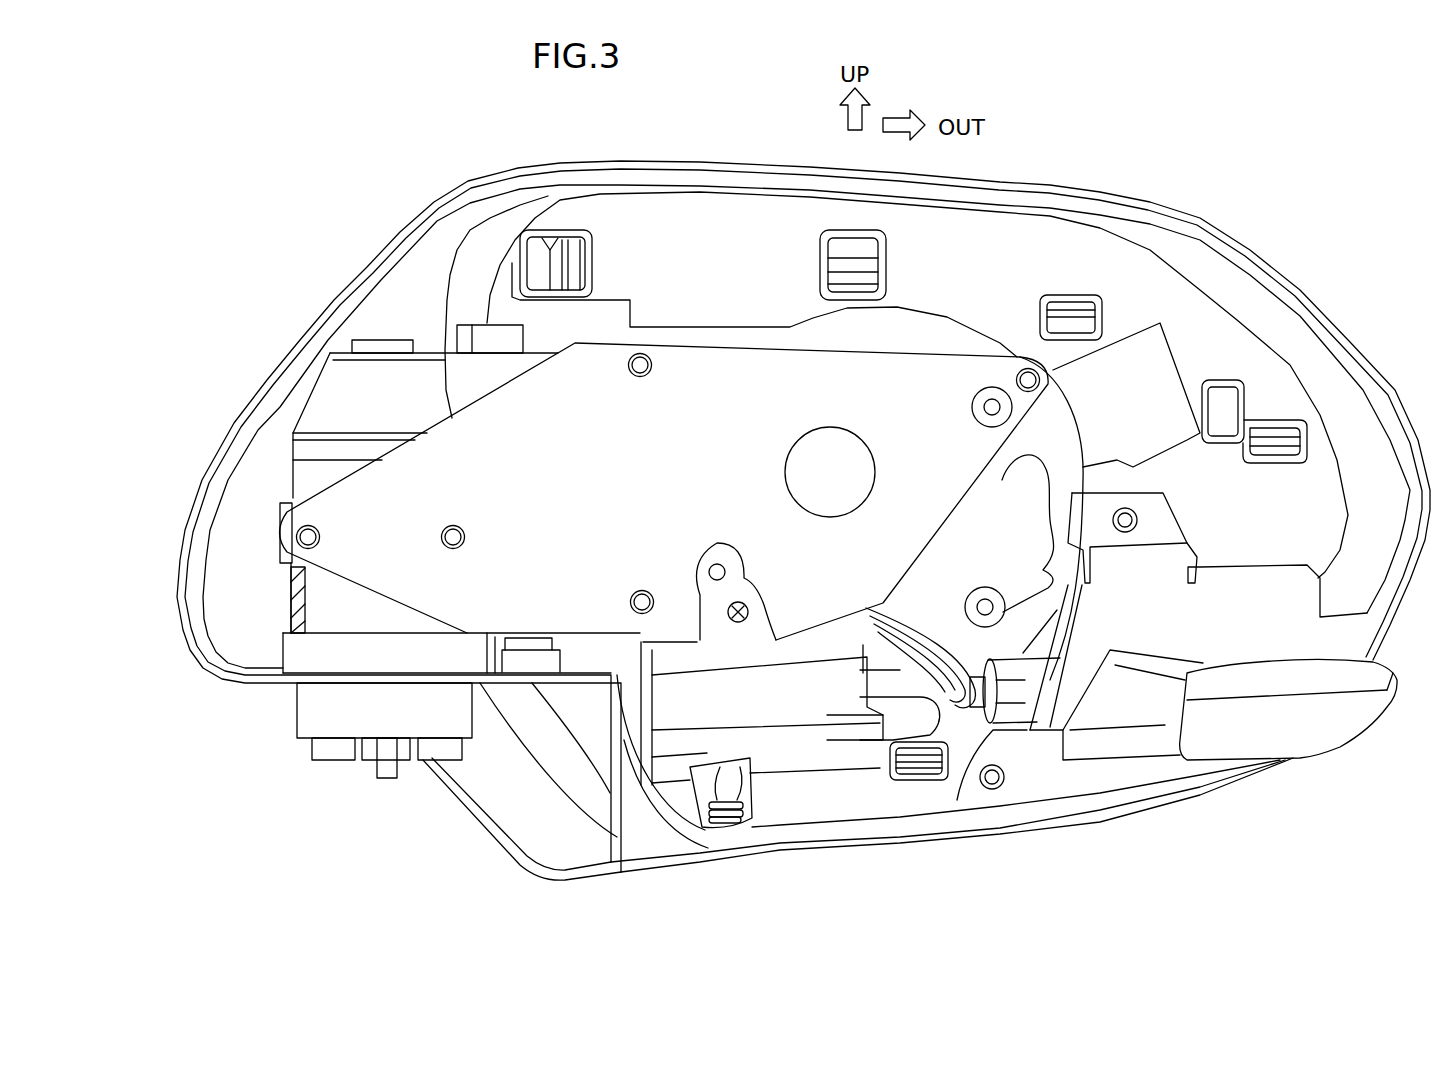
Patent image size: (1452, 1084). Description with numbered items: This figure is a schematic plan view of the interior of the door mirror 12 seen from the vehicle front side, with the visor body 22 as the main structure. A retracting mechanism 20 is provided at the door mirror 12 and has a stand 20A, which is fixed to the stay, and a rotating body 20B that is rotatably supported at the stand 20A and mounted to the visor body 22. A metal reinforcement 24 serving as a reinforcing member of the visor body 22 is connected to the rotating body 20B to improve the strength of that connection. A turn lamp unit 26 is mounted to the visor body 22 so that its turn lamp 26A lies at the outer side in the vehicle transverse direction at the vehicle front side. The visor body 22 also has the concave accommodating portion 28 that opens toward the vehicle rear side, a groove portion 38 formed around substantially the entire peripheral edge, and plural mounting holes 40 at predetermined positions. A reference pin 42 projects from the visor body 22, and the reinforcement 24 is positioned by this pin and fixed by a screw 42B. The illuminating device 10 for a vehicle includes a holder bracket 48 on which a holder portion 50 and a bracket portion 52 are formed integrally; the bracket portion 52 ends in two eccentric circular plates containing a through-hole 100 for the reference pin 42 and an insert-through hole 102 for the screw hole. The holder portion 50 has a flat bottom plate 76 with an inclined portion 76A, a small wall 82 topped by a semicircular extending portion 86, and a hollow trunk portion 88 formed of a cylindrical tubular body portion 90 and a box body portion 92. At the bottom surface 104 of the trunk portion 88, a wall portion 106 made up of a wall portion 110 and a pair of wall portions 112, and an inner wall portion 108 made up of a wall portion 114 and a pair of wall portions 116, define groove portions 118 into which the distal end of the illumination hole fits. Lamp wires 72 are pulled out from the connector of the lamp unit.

The illuminating device for a vehicle 10 is at (528, 836).
The door mirror 12 is at (1286, 229).
The retracting mechanism 20 is at (369, 551).
The stand 20A is at (307, 725).
The rotating body 20B is at (297, 458).
The visor body 22 is at (1040, 235).
The reinforcement 24 is at (700, 362).
The turn lamp unit 26 is at (1210, 541).
The turn lamp 26A is at (1235, 710).
The accommodating portion 28 is at (1032, 531).
The groove portion 38 is at (212, 495).
The mounting holes 40 is at (556, 243).
The reference pin 42 is at (829, 588).
The screw 42B is at (740, 625).
The holder bracket 48 is at (627, 587).
The holder portion 50 is at (640, 742).
The bracket portion 52 is at (657, 657).
The lamp wires 72 is at (957, 714).
The bottom plate 76 is at (776, 714).
The inclined portion 76A is at (717, 737).
The small wall 82 is at (902, 765).
The extending portion 86 is at (900, 718).
The trunk portion 88 is at (812, 859).
The tubular body portion 90 is at (750, 790).
The box body portion 92 is at (742, 795).
The through-hole 100 is at (726, 572).
The insert-through hole 102 is at (749, 610).
The bottom surface 104 is at (755, 831).
The wall portion 106 is at (720, 883).
The inner wall portion 108 is at (792, 742).
The wall portion 110 is at (718, 826).
The wall portions 112 is at (712, 826).
The wall portion 114 is at (727, 783).
The wall portions 116 is at (713, 777).
The groove portions 118 is at (715, 826).